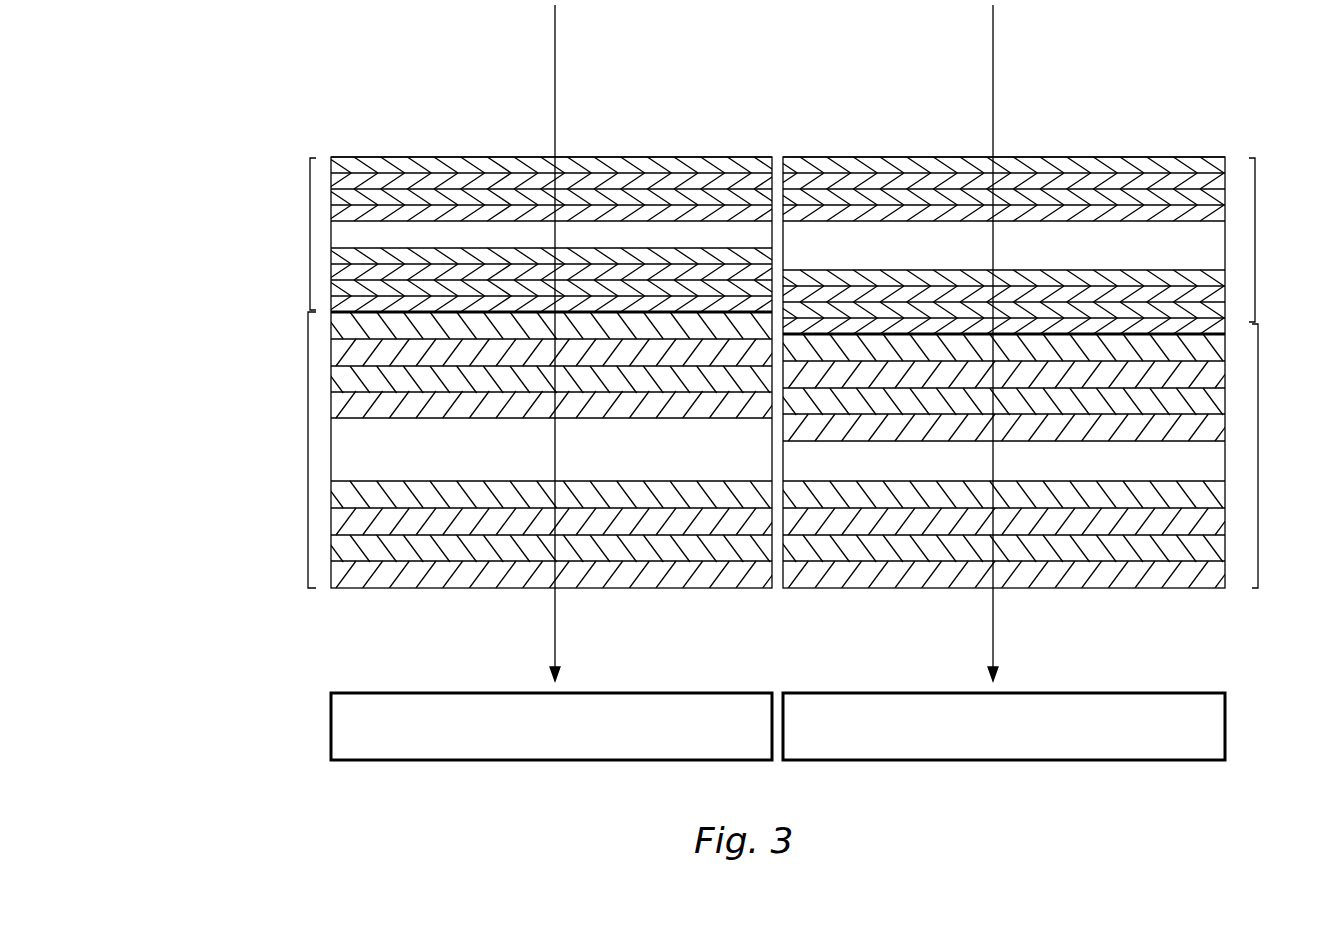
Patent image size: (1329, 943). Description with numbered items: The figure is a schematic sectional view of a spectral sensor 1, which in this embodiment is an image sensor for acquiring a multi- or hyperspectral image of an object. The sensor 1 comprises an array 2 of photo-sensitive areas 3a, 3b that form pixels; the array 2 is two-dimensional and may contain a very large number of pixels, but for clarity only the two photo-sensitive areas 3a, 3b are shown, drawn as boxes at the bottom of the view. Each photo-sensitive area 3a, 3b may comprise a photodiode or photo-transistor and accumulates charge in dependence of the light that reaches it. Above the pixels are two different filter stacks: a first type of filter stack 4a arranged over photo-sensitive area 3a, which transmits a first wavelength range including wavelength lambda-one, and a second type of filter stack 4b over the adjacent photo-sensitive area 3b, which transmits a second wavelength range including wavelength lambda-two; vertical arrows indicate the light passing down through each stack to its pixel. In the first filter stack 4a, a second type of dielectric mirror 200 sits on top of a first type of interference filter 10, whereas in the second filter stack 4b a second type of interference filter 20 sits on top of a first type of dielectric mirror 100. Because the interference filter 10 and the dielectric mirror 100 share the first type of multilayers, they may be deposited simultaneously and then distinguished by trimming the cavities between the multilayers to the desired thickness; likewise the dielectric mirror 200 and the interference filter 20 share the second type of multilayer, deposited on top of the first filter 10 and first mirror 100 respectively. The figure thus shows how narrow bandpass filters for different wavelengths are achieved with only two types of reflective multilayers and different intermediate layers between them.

The spectral sensor 1 is at (180, 131).
The array 2 is at (258, 722).
The photo-sensitive area 3a is at (551, 726).
The photo-sensitive area 3b is at (1004, 726).
The first type of filter stack 4a is at (427, 124).
The second type of filter stack 4b is at (917, 121).
The first type of interference filter 10 is at (307, 449).
The second type of interference filter 20 is at (1256, 241).
The first type of dielectric mirror 100 is at (1259, 446).
The second type of dielectric mirror 200 is at (308, 236).